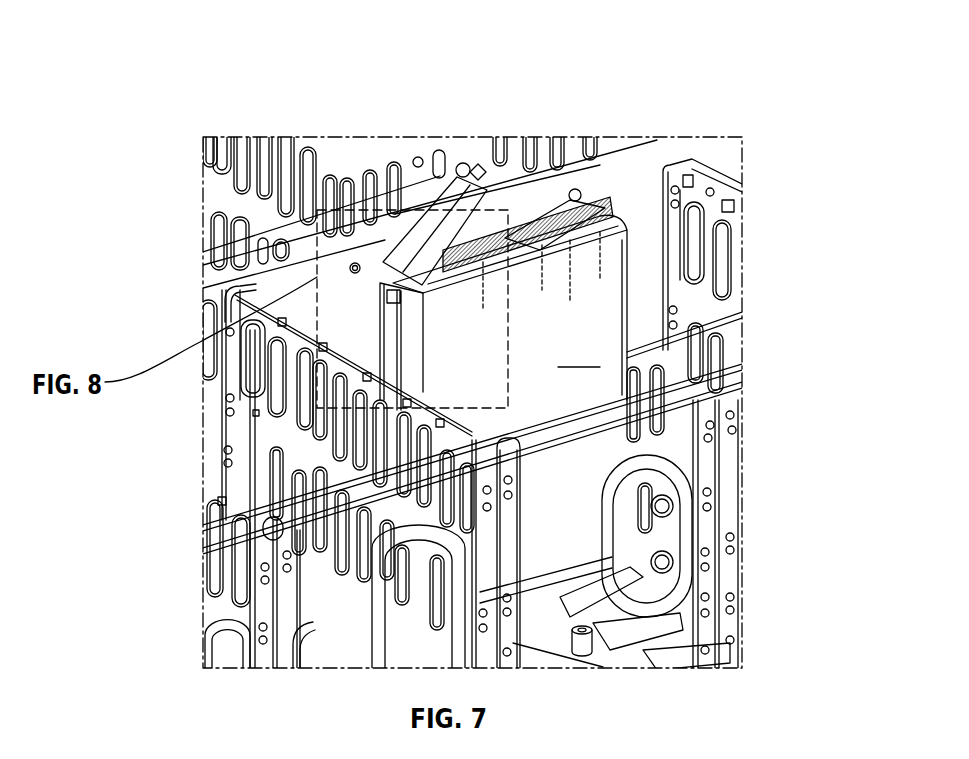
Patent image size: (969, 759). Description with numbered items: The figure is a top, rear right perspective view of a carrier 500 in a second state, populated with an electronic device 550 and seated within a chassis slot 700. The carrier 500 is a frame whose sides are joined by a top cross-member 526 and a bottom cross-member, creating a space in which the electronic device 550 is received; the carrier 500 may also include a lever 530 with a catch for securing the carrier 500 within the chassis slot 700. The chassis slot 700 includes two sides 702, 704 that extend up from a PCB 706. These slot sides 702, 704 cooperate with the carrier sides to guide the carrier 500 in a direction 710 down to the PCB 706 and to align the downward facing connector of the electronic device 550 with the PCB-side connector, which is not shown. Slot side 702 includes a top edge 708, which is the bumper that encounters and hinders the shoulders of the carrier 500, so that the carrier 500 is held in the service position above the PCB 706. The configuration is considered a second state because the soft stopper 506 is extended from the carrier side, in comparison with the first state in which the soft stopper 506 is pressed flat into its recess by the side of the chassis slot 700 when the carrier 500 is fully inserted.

The direction 710 is at (450, 0).
The chassis slot 700 is at (430, 214).
The top edge 708 is at (240, 303).
The carrier 500 is at (435, 224).
The top cross-member 526 is at (528, 230).
The lever 530 is at (412, 309).
The electronic device 550 is at (510, 307).
The slot side 704 is at (702, 254).
The soft stopper 506 is at (401, 346).
The slot side 702 is at (292, 440).
The PCB 706 is at (582, 641).